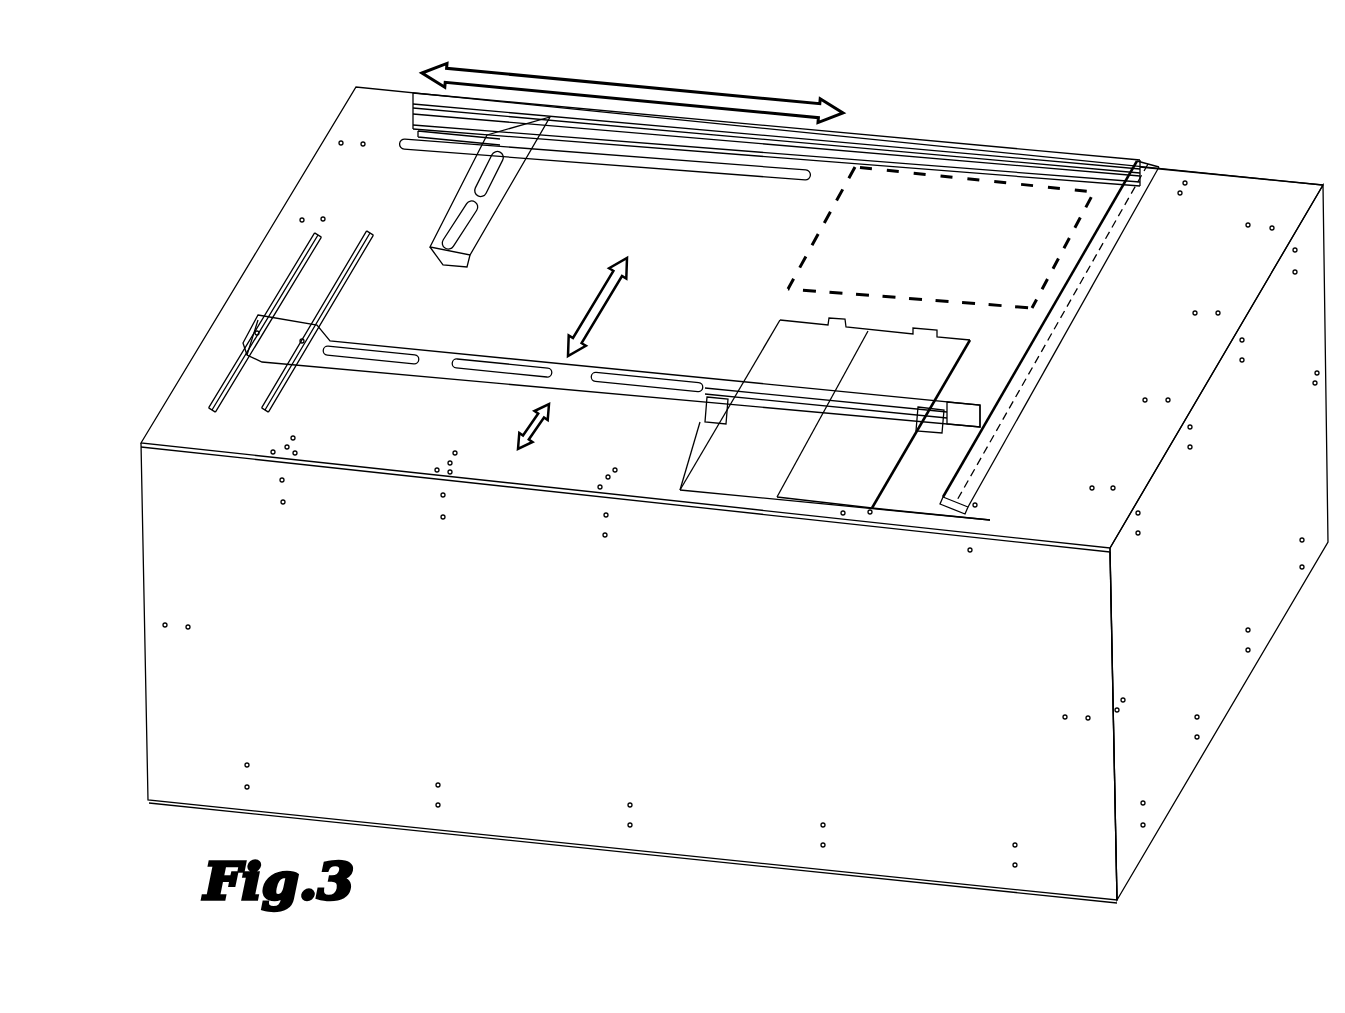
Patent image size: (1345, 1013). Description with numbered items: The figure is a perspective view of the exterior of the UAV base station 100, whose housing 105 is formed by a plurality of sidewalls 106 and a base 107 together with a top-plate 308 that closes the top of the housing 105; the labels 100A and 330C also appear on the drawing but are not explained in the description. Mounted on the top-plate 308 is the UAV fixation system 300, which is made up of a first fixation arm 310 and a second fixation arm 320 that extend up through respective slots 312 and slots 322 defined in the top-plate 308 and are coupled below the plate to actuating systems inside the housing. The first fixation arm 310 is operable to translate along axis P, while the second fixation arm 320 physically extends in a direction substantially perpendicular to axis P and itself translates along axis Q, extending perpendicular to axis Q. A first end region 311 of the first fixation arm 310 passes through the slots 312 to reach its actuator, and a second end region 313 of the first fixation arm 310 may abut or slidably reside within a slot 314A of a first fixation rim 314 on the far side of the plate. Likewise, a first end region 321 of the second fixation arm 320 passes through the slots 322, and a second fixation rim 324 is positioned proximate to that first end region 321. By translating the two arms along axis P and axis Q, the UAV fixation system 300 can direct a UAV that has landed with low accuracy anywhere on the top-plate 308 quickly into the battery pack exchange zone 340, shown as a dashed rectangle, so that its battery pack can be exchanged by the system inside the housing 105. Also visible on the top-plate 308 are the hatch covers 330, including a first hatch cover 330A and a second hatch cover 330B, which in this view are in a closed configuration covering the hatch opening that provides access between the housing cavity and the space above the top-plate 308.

The UAV base station 100 is at (1040, 88).
The housing 100A is at (1125, 104).
The housing 105 is at (318, 144).
The sidewalls 106 is at (1110, 675).
The base 107 is at (605, 852).
The UAV fixation system 300 is at (808, 88).
The top-plate 308 is at (1213, 173).
The first fixation arm 310 is at (680, 367).
The first end region 311 is at (273, 323).
The slots 312 is at (348, 297).
The second end region 313 is at (983, 397).
The first fixation rim 314 is at (1017, 387).
The slot 314A is at (975, 505).
The second fixation arm 320 is at (503, 205).
The first end region 321 is at (478, 150).
The slots 322 is at (690, 178).
The second fixation rim 324 is at (890, 143).
The hatch covers 330 is at (678, 487).
The first hatch cover 330A is at (683, 470).
The second hatch cover 330B is at (843, 514).
The tray third section 330C is at (872, 512).
The battery pack exchange zone 340 is at (932, 240).
The axis P is at (575, 302).
The axis Q is at (610, 68).